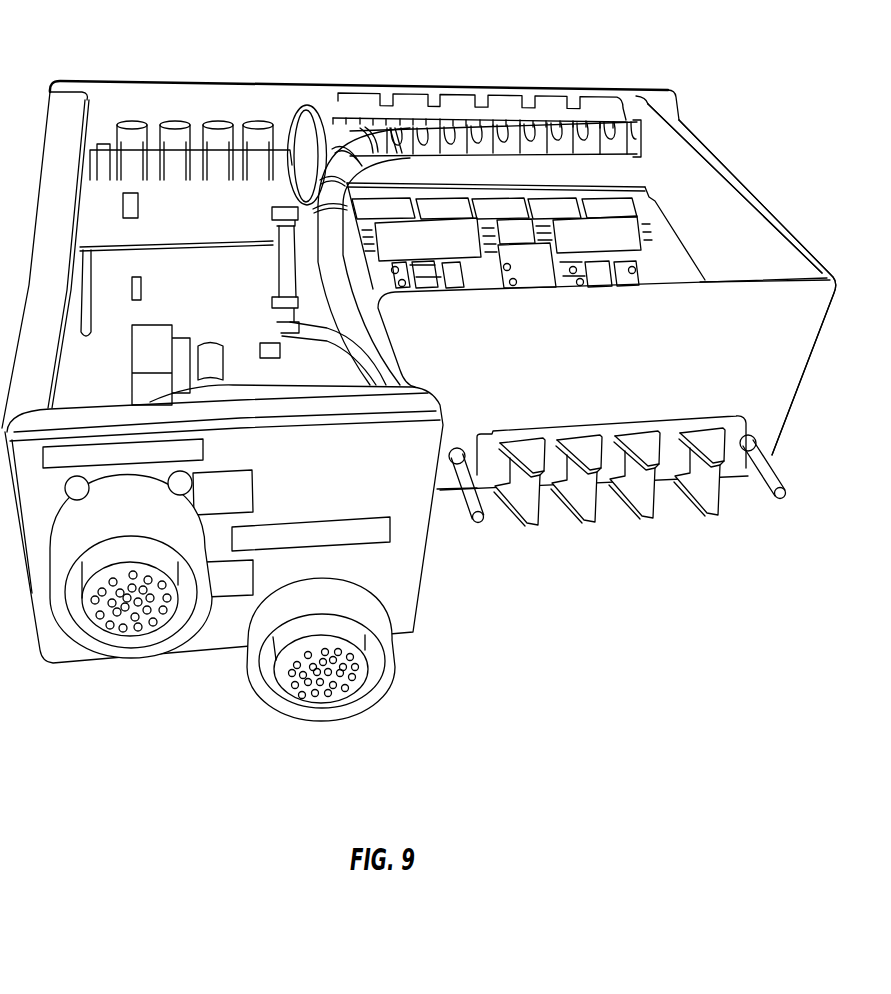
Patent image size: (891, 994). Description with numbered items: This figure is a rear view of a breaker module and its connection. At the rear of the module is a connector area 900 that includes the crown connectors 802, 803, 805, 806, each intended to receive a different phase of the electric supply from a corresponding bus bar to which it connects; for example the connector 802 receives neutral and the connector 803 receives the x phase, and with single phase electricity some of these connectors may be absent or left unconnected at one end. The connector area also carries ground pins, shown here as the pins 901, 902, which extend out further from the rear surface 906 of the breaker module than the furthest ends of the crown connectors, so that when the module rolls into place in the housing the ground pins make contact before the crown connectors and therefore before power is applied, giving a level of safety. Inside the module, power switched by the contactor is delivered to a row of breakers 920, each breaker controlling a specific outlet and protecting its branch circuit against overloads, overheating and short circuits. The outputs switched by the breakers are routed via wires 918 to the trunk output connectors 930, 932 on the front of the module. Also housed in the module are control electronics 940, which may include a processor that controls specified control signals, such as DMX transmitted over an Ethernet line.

The connector area 900 is at (762, 570).
The guide pin 901 is at (767, 473).
The ground pin 902 is at (480, 524).
The rear surface 906 is at (790, 372).
The crown connector 802 is at (540, 522).
The crown connector 803 is at (604, 521).
The crown connector 805 is at (664, 519).
The crown connector 806 is at (722, 512).
The wires 918 is at (292, 118).
The row of breakers 920 is at (313, 107).
The trunk output connector 930 is at (322, 699).
The trunk output connector 932 is at (132, 636).
The control electronics 940 is at (198, 147).